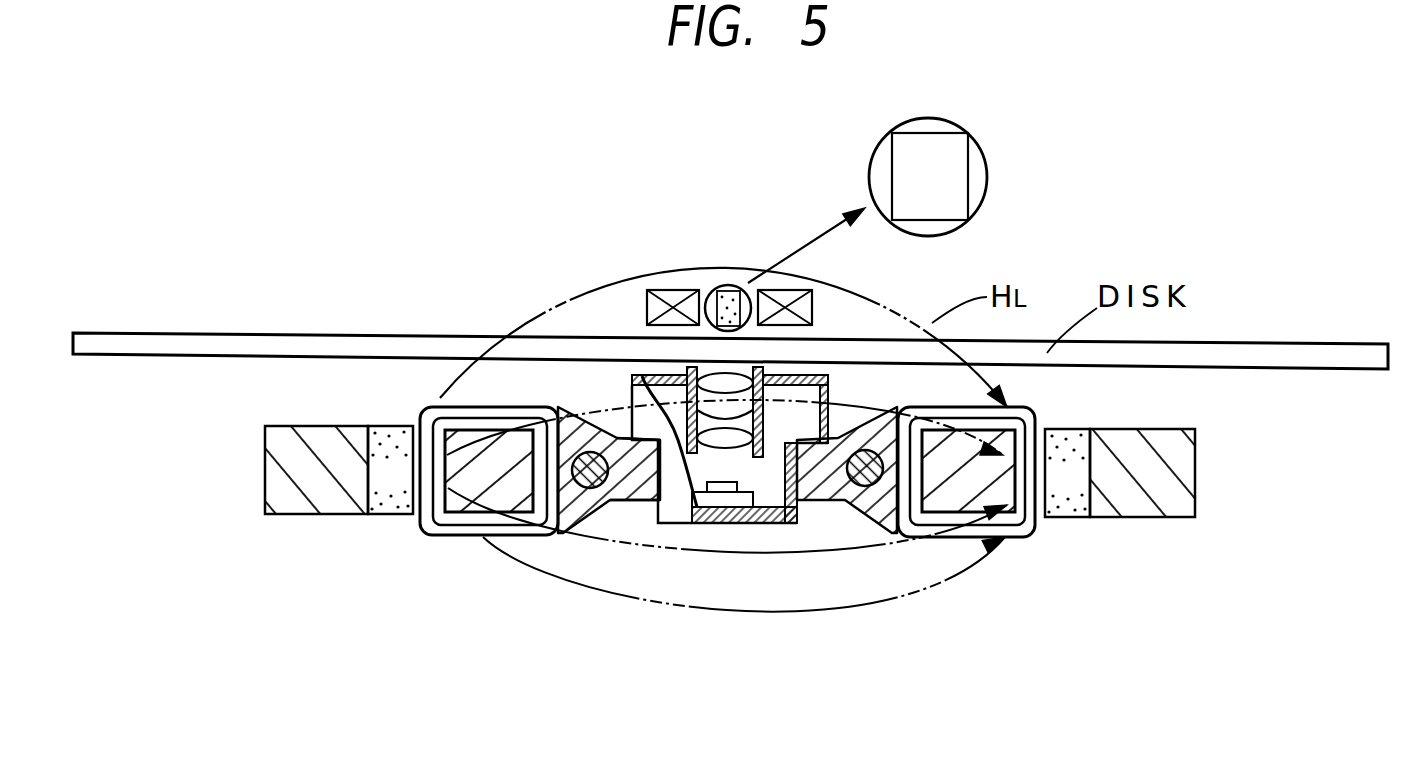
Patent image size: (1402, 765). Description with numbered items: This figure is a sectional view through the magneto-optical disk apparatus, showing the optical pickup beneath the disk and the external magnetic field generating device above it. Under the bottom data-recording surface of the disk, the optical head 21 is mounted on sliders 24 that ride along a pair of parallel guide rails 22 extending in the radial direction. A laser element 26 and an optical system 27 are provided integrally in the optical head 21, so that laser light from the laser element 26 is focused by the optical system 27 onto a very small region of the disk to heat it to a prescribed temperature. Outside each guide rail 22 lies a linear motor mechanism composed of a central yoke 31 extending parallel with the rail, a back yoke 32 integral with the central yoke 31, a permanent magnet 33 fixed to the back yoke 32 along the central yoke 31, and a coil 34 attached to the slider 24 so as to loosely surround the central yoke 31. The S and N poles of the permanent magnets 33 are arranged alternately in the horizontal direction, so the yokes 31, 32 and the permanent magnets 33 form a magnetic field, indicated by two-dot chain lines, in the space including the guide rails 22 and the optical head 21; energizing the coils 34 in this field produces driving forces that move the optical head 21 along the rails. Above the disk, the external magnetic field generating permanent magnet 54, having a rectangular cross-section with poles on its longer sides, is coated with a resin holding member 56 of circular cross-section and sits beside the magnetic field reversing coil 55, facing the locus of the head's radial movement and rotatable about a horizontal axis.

The optical head 21 is at (645, 426).
The guide rails 22 is at (595, 488).
The sliders 24 is at (623, 487).
The laser element 26 is at (727, 510).
The optical system 27 is at (722, 403).
The central yoke 31 is at (473, 490).
The back yoke 32 is at (318, 505).
The permanent magnet 33 is at (393, 510).
The coil 34 is at (437, 415).
The external magnetic field generating permanent magnet 54 is at (730, 288).
The magnetic field reversing coil 55 is at (675, 297).
The holding member 56 is at (742, 288).